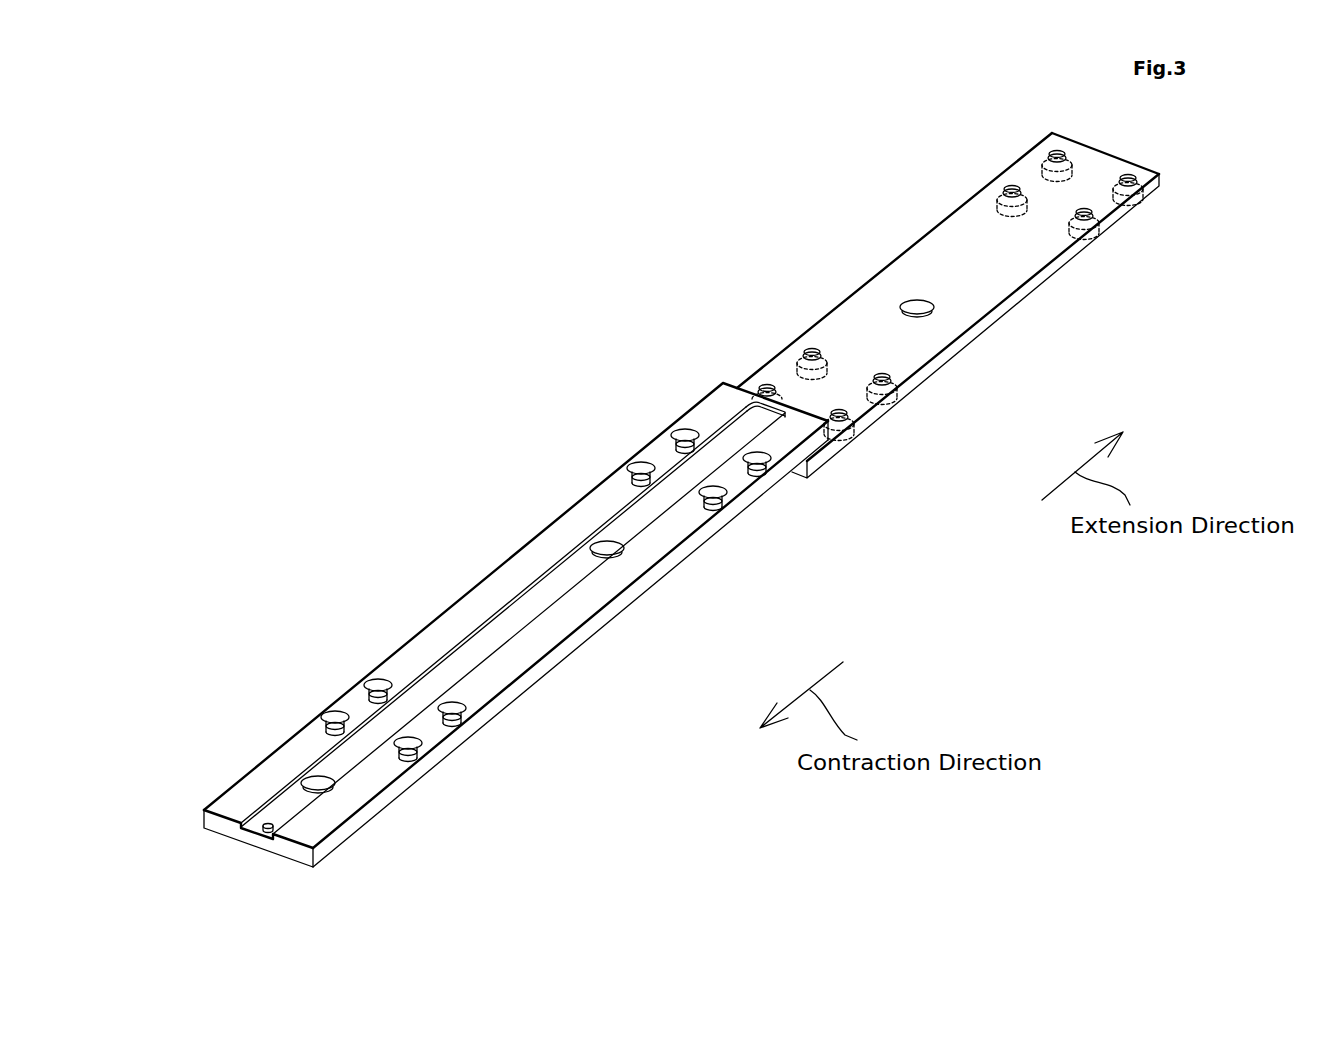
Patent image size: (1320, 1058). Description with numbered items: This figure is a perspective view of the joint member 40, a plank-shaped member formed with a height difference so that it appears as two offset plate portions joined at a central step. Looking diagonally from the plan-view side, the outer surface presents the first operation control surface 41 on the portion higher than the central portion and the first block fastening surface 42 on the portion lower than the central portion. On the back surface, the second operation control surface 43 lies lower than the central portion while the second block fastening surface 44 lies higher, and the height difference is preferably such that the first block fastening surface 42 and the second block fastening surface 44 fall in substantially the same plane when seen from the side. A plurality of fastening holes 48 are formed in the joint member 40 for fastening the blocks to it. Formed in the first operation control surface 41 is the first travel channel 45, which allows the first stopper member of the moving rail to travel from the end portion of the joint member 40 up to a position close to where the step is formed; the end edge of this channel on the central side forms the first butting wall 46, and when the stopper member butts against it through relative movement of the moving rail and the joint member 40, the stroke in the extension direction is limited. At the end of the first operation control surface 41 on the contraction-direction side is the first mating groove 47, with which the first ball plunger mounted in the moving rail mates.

The joint member 40 is at (468, 262).
The first operation control surface 41 is at (527, 565).
The first block fastening surface 42 is at (924, 256).
The second operation control surface 43 is at (1050, 310).
The second block fastening surface 44 is at (590, 668).
The first travel channel 45 is at (478, 655).
The first butting wall 46 is at (737, 418).
The first mating groove 47 is at (265, 828).
The fastening holes 48 is at (1008, 186).